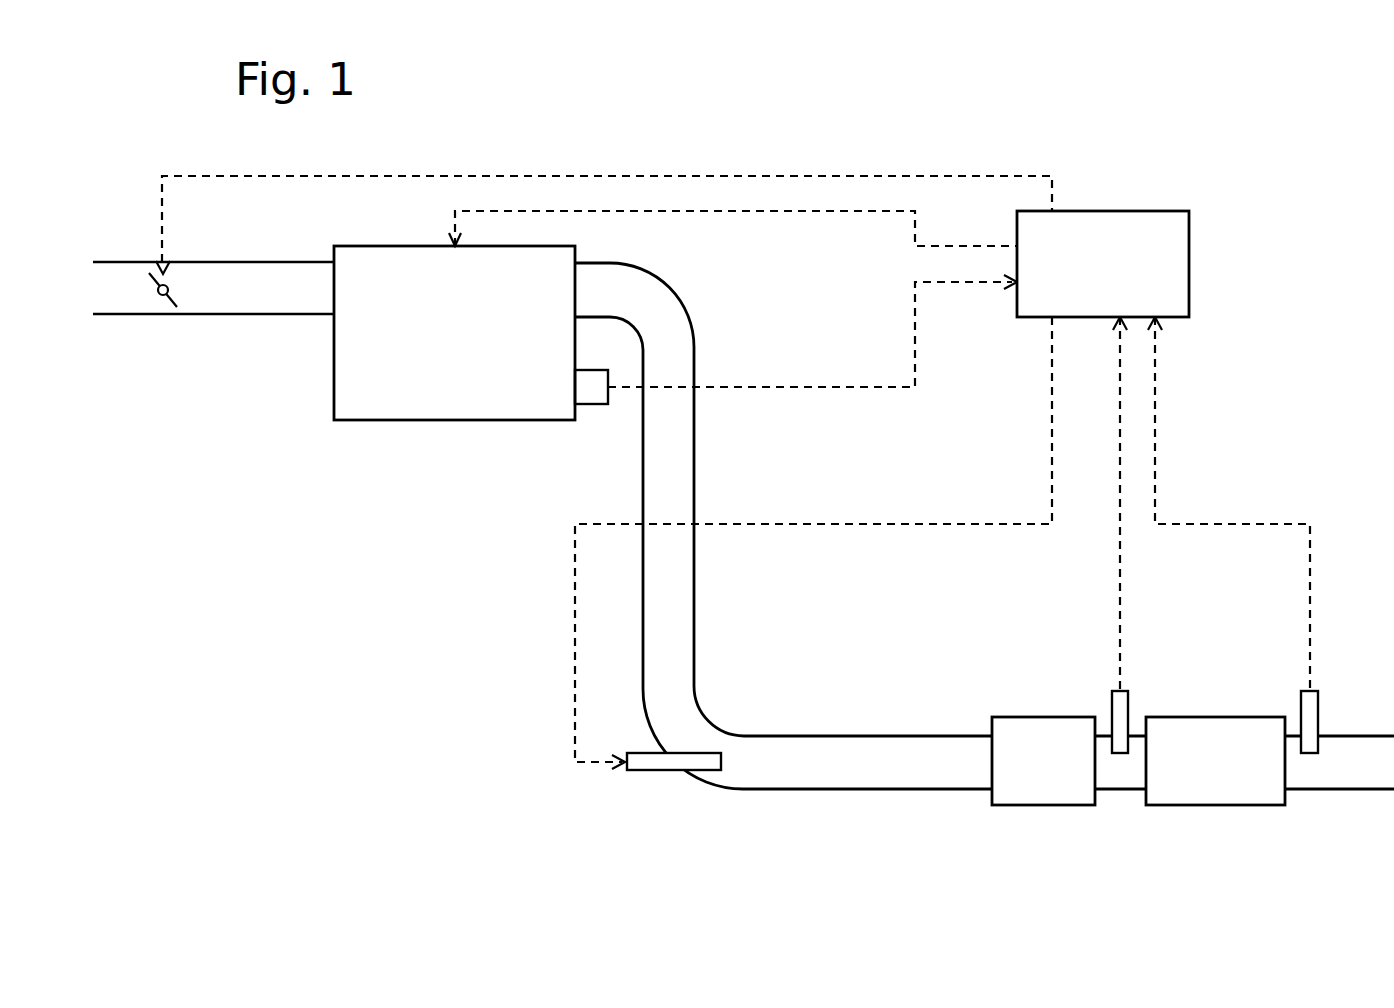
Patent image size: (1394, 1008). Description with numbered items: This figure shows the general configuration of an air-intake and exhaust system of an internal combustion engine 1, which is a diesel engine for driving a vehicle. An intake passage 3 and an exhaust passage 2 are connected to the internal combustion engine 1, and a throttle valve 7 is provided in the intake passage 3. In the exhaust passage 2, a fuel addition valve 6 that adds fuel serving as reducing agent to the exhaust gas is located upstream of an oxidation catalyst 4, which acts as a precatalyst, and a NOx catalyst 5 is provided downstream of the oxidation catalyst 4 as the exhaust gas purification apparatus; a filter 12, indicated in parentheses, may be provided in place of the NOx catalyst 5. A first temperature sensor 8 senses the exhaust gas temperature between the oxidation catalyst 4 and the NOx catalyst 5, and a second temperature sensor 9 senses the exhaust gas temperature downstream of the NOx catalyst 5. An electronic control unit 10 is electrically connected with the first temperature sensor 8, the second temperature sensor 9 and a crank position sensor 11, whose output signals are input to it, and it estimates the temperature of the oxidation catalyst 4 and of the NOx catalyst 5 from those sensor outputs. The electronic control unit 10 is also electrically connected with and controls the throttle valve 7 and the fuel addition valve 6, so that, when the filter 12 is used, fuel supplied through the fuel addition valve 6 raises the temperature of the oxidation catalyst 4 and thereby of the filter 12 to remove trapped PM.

The internal combustion engine 1 is at (473, 421).
The exhaust passage 2 is at (695, 638).
The intake passage 3 is at (282, 317).
The oxidation catalyst 4 is at (1040, 806).
The NOx catalyst 5 is at (1232, 794).
The filter 12 is at (1218, 806).
The fuel addition valve 6 is at (670, 772).
The throttle valve 7 is at (157, 297).
The first temperature sensor 8 is at (1130, 710).
The second temperature sensor 9 is at (1320, 710).
The electronic control unit 10 is at (1105, 211).
The crank position sensor 11 is at (592, 406).